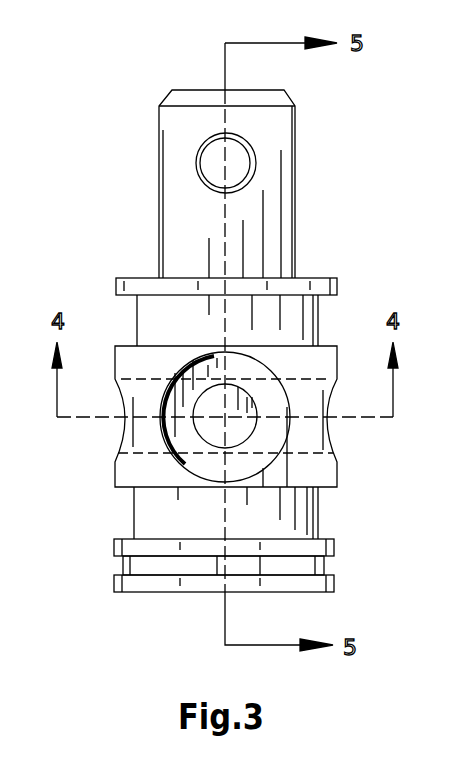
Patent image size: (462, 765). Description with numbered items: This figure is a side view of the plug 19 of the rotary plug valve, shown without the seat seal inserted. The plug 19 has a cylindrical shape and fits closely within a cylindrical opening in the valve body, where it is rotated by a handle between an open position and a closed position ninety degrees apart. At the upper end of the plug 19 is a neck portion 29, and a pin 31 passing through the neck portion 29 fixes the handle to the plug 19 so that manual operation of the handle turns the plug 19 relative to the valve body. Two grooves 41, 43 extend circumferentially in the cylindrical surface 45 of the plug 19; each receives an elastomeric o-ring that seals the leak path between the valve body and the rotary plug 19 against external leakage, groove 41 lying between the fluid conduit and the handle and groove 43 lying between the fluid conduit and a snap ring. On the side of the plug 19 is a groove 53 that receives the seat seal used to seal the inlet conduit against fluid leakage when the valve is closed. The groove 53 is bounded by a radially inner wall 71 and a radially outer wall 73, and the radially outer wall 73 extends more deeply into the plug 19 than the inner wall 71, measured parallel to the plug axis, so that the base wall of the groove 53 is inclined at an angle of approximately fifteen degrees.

The plug 19 is at (268, 587).
The neck portion 29 is at (193, 125).
The pin 31 is at (238, 157).
The groove 41 is at (323, 315).
The groove 43 is at (123, 517).
The cylindrical surface 45 is at (113, 355).
The groove 53 is at (267, 435).
The radially inner wall 71 is at (197, 427).
The radially outer wall 73 is at (188, 463).